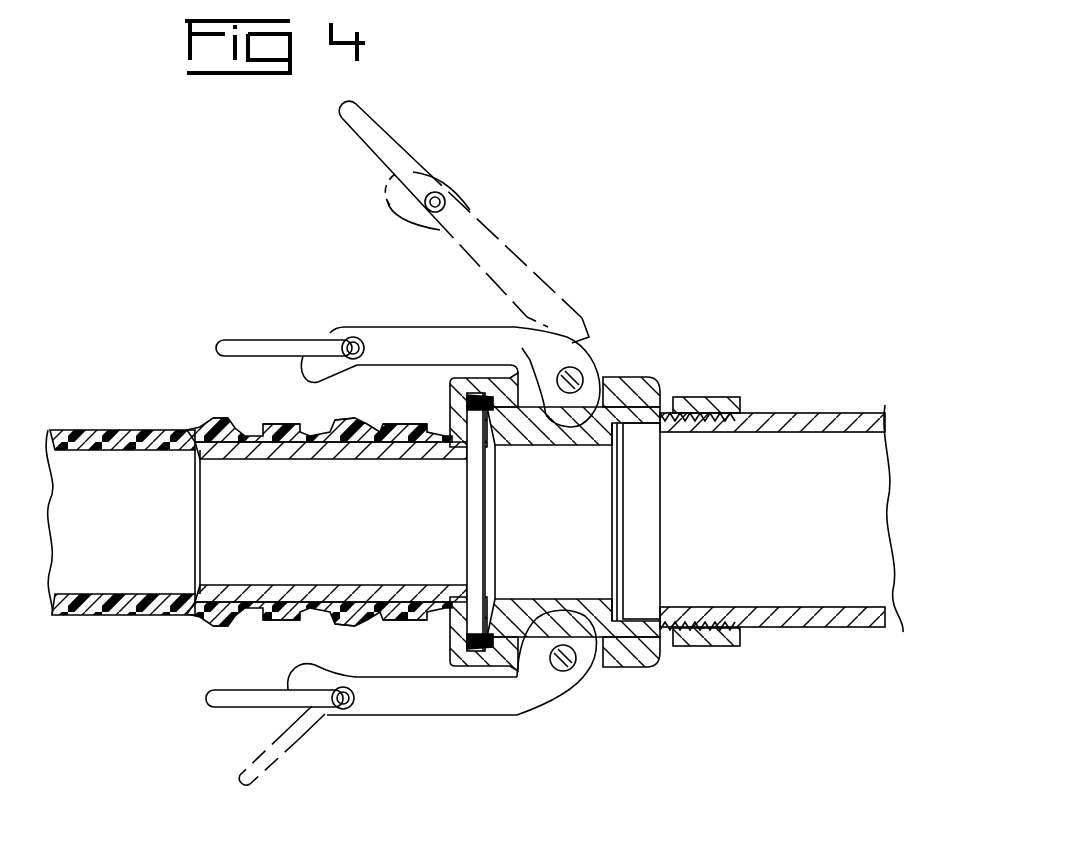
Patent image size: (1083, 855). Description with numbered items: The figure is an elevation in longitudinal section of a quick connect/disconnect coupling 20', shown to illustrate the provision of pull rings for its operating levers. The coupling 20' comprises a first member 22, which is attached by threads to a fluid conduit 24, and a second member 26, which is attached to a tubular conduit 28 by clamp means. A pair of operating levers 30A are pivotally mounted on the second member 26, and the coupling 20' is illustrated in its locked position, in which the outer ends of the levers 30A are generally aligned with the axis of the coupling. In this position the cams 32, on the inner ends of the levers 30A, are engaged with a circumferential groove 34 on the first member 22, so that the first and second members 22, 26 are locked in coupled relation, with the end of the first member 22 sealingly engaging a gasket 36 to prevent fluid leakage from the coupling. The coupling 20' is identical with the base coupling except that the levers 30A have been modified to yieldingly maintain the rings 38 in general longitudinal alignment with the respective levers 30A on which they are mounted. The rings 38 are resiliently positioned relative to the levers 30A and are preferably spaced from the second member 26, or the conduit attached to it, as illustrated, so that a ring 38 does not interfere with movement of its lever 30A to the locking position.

The coupling 20' is at (746, 276).
The first member 22 is at (699, 397).
The fluid conduit 24 is at (826, 413).
The second member 26 is at (455, 378).
The tubular conduit 28 is at (132, 615).
The levers 30A is at (413, 326).
The cams 32 is at (540, 446).
The circumferential groove 34 is at (545, 523).
The gasket 36 is at (467, 513).
The rings 38 is at (252, 690).